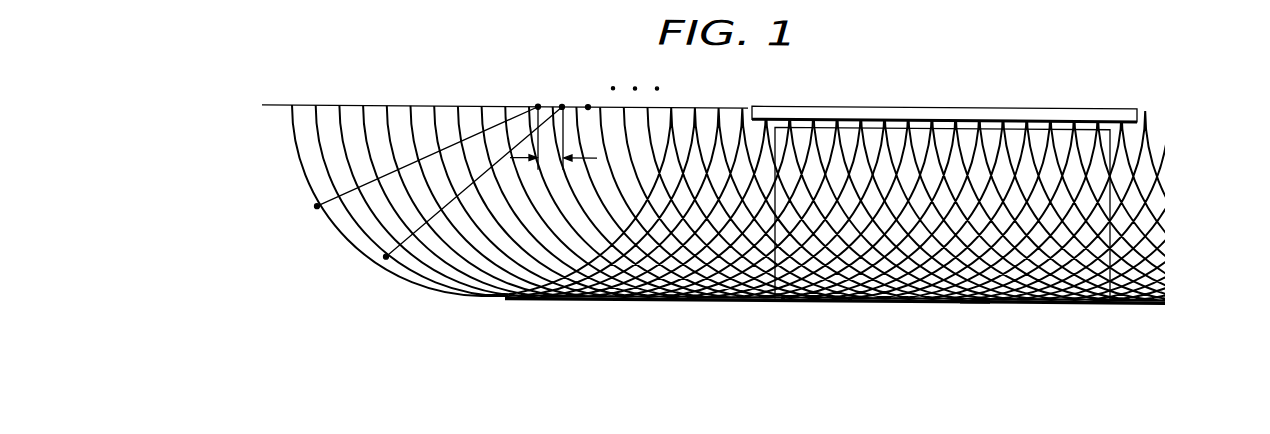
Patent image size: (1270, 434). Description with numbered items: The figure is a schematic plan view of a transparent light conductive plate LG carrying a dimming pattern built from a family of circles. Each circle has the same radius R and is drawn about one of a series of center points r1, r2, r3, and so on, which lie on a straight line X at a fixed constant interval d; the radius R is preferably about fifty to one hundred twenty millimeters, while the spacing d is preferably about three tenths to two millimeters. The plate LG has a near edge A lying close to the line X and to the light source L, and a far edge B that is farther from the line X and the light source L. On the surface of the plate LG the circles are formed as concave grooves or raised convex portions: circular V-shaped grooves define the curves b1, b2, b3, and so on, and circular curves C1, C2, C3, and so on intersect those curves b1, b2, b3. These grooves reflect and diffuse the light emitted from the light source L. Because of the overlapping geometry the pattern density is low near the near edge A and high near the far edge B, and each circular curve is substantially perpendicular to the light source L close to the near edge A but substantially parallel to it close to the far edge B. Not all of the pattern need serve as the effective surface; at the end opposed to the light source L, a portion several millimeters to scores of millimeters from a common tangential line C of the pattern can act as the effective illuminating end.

The straight line X is at (420, 104).
The center point r1 is at (546, 86).
The center point r2 is at (571, 86).
The center point r3 is at (594, 86).
The radius R is at (439, 182).
The center spacing d is at (553, 142).
The circular curve C1 is at (814, 122).
The circular curve C2 is at (843, 135).
The circular curve C3 is at (872, 144).
The light source L is at (1062, 103).
The near edge A is at (1087, 125).
The transparent light conductive plate LG is at (781, 212).
The curve b1 is at (783, 297).
The curve b2 is at (810, 295).
The curve b3 is at (850, 295).
The common tangential line C is at (975, 296).
The far edge B is at (1030, 297).